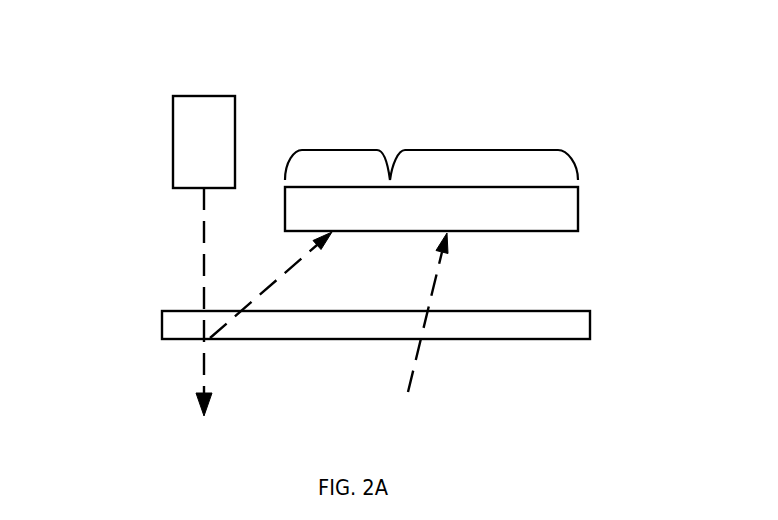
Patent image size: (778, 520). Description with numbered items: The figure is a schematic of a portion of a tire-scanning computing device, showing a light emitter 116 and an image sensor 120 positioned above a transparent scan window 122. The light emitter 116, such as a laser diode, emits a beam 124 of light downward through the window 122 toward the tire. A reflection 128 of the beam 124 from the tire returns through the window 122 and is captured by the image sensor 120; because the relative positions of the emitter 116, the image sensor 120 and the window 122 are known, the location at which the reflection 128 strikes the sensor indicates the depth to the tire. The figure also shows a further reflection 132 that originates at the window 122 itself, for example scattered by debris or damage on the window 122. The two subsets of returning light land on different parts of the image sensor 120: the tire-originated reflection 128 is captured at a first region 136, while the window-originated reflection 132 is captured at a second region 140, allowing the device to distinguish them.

The light emitter 116 is at (203, 95).
The image sensor 120 is at (578, 208).
The transparent scan window 122 is at (590, 323).
The beam 124 is at (203, 250).
The reflection 128 is at (413, 368).
The further reflection 132 is at (272, 283).
The first region 136 is at (483, 150).
The second region 140 is at (338, 150).